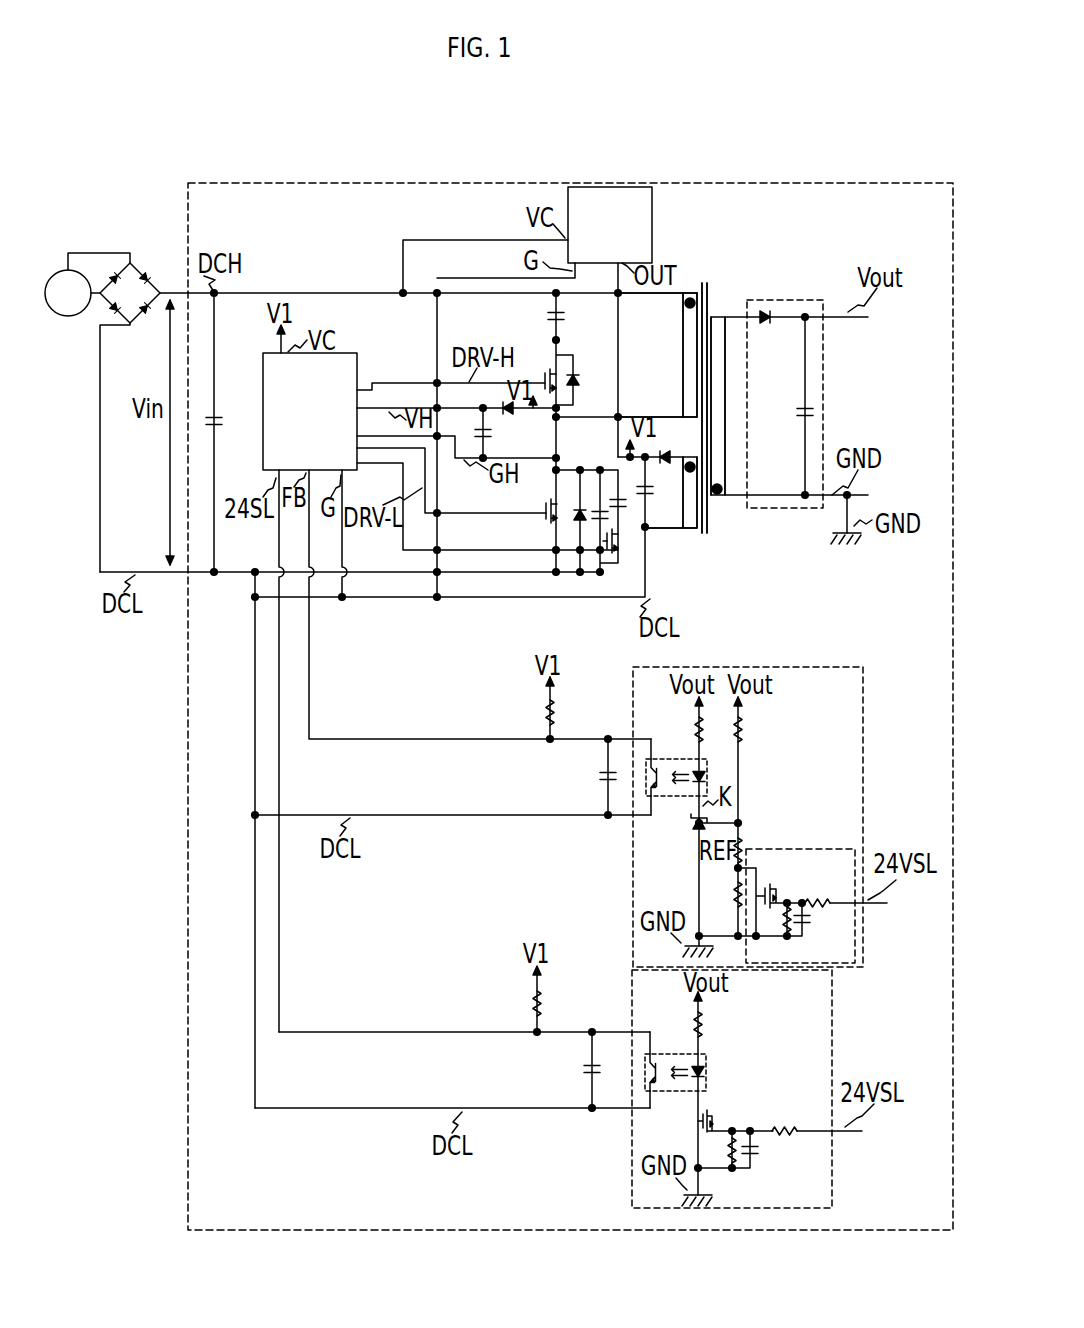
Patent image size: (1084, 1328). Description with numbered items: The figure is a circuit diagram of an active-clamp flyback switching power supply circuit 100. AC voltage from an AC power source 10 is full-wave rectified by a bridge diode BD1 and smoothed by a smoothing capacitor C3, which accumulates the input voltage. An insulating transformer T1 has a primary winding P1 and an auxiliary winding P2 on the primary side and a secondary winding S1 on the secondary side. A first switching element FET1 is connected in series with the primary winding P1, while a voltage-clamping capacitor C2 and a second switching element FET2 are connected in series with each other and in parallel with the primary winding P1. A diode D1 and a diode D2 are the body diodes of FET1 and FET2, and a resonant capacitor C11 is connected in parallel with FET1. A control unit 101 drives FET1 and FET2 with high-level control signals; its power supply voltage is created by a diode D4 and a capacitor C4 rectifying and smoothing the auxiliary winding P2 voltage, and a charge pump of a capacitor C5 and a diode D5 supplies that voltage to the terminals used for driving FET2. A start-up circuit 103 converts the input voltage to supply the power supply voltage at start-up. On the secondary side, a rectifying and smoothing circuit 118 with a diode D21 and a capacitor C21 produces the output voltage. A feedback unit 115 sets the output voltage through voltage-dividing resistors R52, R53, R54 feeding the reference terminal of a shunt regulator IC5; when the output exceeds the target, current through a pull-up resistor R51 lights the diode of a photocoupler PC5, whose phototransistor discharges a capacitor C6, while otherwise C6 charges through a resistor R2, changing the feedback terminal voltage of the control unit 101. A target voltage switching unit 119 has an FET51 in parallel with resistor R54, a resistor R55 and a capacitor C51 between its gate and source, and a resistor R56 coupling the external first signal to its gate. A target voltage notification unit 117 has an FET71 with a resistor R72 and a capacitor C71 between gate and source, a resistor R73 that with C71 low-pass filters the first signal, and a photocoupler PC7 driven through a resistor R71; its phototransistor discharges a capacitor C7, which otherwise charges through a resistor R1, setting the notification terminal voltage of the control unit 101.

The AC power source 10 is at (80, 270).
The bridge diode BD1 is at (141, 266).
The smoothing capacitor C3 is at (226, 427).
The control unit 101 is at (310, 411).
The start-up circuit 103 is at (610, 226).
The switching power supply circuit 100 is at (765, 182).
The voltage-clamping capacitor C2 is at (549, 317).
The second switching element FET2 is at (541, 372).
The body diode of FET2 D2 is at (578, 365).
The diode D5 is at (513, 409).
The capacitor C5 is at (492, 430).
The resonant capacitor C11 is at (595, 498).
The first switching element FET1 is at (545, 510).
The body diode of FET1 D1 is at (575, 522).
The capacitor C4 is at (653, 497).
The diode D4 is at (658, 452).
The transformer T1 is at (711, 292).
The primary winding P1 is at (657, 355).
The auxiliary winding P2 is at (671, 492).
The secondary winding S1 is at (730, 406).
The diode D21 is at (768, 312).
The rectifying and smoothing circuit 118 is at (812, 298).
The capacitor C21 is at (794, 407).
The feedback unit 115 is at (698, 666).
The resistor R2 is at (542, 707).
The capacitor C6 is at (601, 772).
The photocoupler PC5 is at (680, 808).
The pull-up resistor R51 is at (692, 736).
The voltage-dividing resistor R52 is at (747, 740).
The shunt regulator IC5 is at (690, 840).
The voltage-dividing resistor R53 is at (743, 847).
The voltage-dividing resistor R54 is at (730, 901).
The target voltage switching unit 119 is at (788, 850).
The FET FET51 is at (772, 890).
The resistor R55 is at (783, 920).
The capacitor C51 is at (805, 928).
The resistor R56 is at (805, 906).
The target voltage notification unit 117 is at (628, 1168).
The resistor R1 is at (532, 1003).
The capacitor C7 is at (583, 1064).
The photocoupler PC7 is at (678, 1099).
The resistor R71 is at (693, 1030).
The FET FET71 is at (718, 1120).
The resistor R72 is at (727, 1150).
The first capacitor C71 is at (769, 1148).
The first resistor R73 is at (788, 1135).